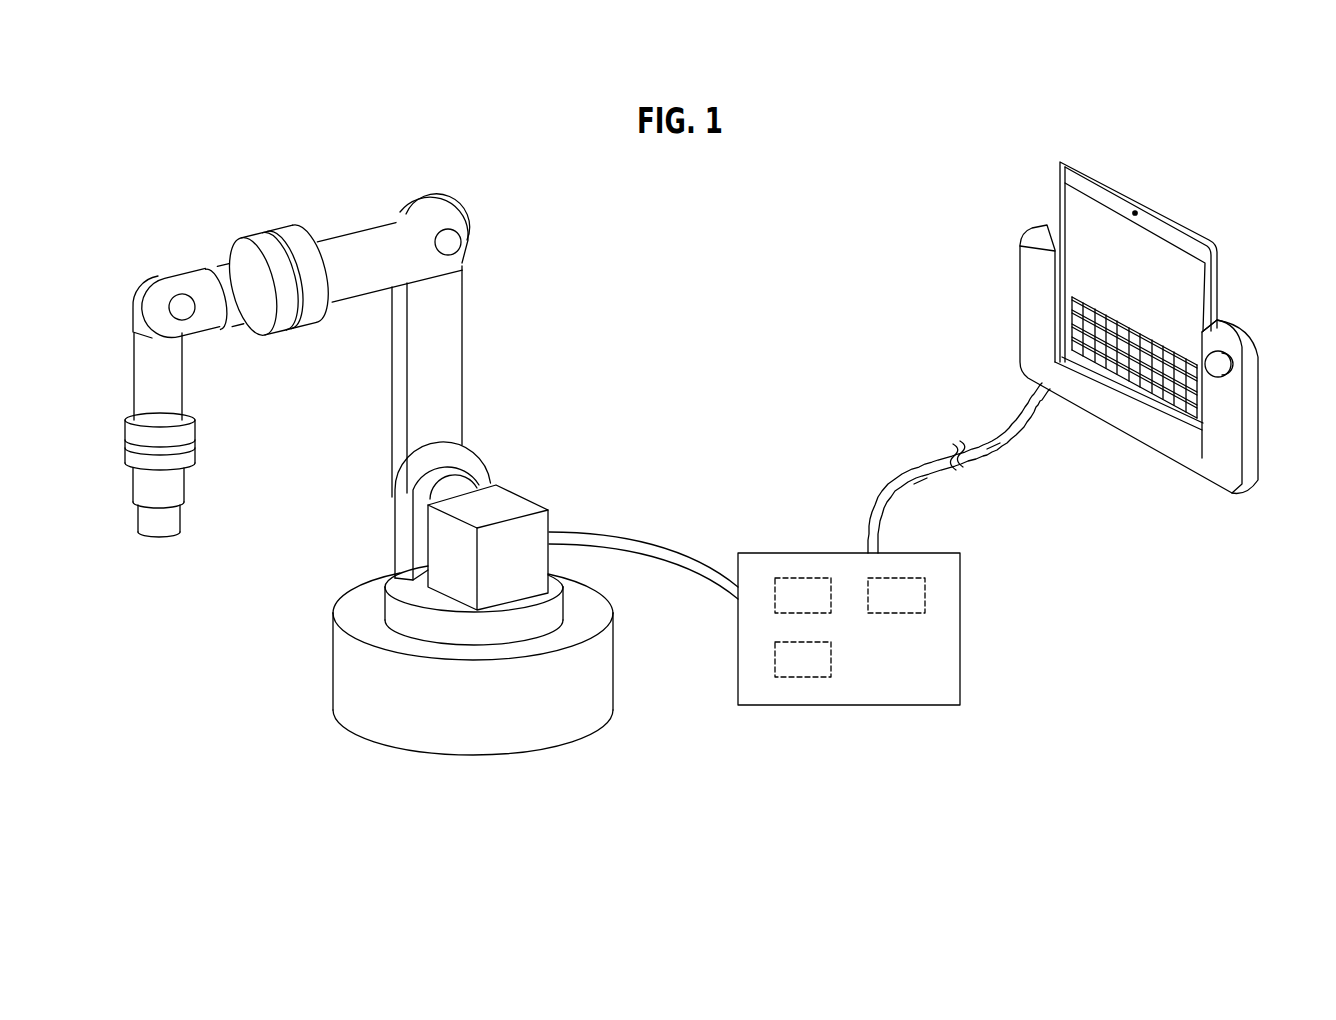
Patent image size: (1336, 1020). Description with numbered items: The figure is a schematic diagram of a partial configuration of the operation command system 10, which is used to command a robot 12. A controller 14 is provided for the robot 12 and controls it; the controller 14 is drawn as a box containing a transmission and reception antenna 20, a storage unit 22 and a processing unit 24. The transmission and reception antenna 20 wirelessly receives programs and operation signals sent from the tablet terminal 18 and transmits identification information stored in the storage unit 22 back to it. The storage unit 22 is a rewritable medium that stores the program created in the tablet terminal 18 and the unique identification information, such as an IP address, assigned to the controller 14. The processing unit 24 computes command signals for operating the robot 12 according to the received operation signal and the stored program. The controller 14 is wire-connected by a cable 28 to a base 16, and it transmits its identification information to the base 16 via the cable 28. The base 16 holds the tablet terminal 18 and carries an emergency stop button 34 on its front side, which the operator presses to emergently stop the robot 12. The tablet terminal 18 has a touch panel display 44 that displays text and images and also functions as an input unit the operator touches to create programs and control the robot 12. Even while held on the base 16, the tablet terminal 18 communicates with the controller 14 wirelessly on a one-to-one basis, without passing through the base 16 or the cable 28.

The operation command system 10 is at (1110, 620).
The robot 12 is at (463, 298).
The controller 14 is at (960, 606).
The base 16 is at (1018, 292).
The tablet terminal 18 is at (1082, 165).
The transmission and reception antenna 20 is at (793, 578).
The storage unit 22 is at (910, 578).
The processing unit 24 is at (803, 677).
The cable 28 is at (928, 470).
The emergency stop button 34 is at (1216, 358).
The touch panel display 44 is at (1140, 243).